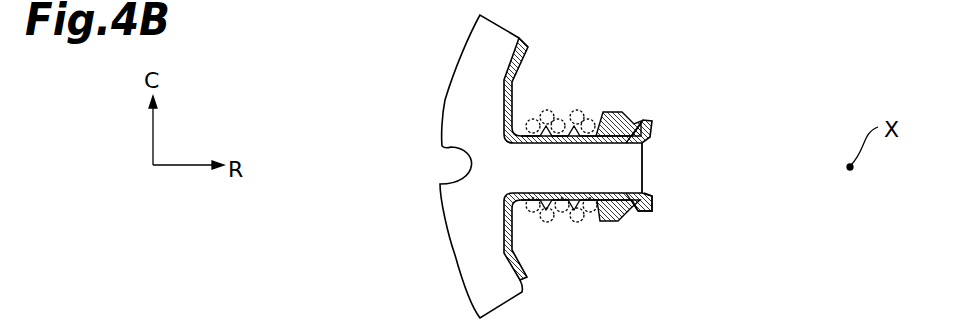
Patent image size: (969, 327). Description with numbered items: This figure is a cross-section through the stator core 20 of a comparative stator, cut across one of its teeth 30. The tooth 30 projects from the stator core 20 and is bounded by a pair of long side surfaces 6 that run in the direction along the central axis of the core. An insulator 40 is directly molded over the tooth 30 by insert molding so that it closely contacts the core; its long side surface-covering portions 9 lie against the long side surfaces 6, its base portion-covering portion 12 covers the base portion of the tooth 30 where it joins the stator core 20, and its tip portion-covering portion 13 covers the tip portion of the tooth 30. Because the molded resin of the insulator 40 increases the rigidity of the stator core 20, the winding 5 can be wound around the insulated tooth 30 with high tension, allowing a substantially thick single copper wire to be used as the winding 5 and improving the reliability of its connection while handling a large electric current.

The comparative stator core 20 is at (481, 15).
The base portion-covering portion 12 is at (504, 108).
The long side surfaces 6 is at (548, 117).
The insulator 40 is at (609, 113).
The long side surface-covering portions 9 is at (613, 130).
The teeth 30 is at (643, 160).
The tip portion-covering portion 13 is at (651, 194).
The winding 5 is at (573, 222).